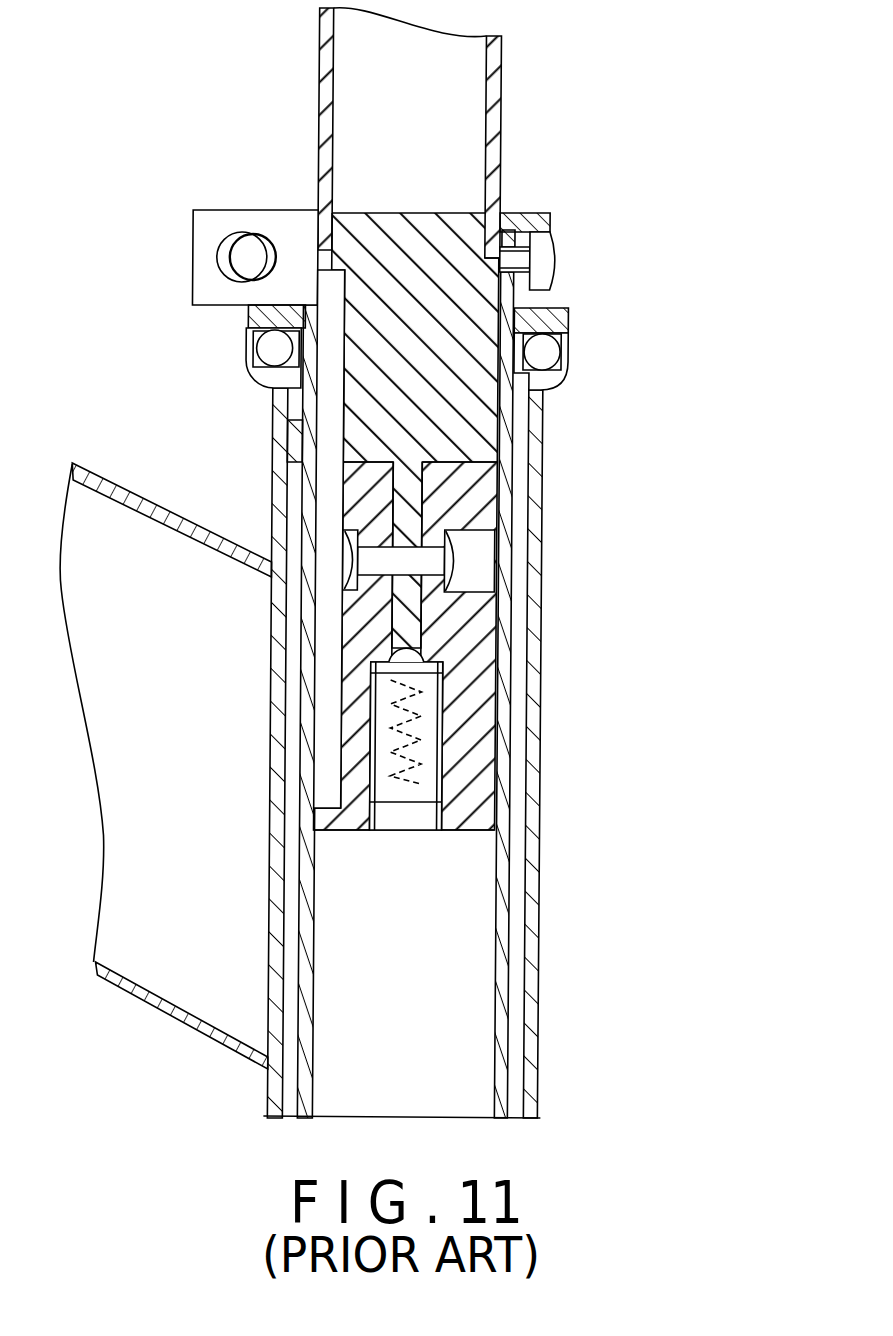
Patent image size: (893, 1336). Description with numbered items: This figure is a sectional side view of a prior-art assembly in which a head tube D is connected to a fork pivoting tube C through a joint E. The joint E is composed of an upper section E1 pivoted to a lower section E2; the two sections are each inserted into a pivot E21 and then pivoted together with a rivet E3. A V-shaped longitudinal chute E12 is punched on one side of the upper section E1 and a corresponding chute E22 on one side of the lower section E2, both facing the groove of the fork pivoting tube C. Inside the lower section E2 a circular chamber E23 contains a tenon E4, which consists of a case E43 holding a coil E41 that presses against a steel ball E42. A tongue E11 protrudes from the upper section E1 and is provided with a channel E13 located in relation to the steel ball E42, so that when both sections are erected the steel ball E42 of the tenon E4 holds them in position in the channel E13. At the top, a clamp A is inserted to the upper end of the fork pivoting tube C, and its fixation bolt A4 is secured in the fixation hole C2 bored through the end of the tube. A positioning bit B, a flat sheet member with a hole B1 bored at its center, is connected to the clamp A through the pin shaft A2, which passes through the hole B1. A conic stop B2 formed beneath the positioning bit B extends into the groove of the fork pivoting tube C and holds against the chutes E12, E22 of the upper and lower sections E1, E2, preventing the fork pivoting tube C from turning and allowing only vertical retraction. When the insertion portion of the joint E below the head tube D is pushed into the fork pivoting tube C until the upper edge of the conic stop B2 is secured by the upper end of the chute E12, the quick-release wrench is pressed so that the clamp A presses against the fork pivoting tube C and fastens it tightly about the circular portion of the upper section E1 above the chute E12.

The clamp A is at (537, 223).
The pin shaft A2 is at (253, 255).
The fixation bolt A4 is at (542, 272).
The positioning bit B is at (270, 220).
The hole B1 is at (230, 248).
The conic stop B2 is at (330, 289).
The fork pivoting tube C is at (510, 300).
The fixation hole C2 is at (507, 248).
The head tube D is at (496, 95).
The joint E is at (470, 665).
The upper section E1 is at (438, 338).
The tongue E11 is at (408, 505).
The chute E12 is at (335, 380).
The channel E13 is at (425, 654).
The lower section E2 is at (433, 670).
The pivot E21 is at (473, 505).
The chute E22 is at (332, 558).
The circular chamber E23 is at (405, 823).
The rivet E3 is at (423, 568).
The tenon E4 is at (562, 746).
The coil E41 is at (420, 746).
The steel ball E42 is at (372, 662).
The case E43 is at (430, 795).